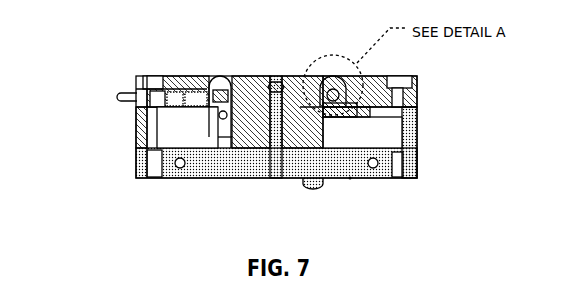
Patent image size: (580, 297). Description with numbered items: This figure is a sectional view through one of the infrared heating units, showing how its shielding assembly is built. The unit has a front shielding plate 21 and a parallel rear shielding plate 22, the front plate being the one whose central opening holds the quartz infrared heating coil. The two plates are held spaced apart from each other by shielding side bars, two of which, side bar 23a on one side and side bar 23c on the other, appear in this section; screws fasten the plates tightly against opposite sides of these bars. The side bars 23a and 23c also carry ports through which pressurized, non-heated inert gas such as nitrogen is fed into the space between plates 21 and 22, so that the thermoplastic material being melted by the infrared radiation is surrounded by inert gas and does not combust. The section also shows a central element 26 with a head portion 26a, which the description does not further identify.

The front shielding plate 21 is at (418, 82).
The rear shielding plate 22 is at (418, 168).
The shielding side bar 23a is at (136, 120).
The shielding side bar 23c is at (418, 124).
The pin slot 26 is at (256, 76).
The pin head 26a is at (282, 77).